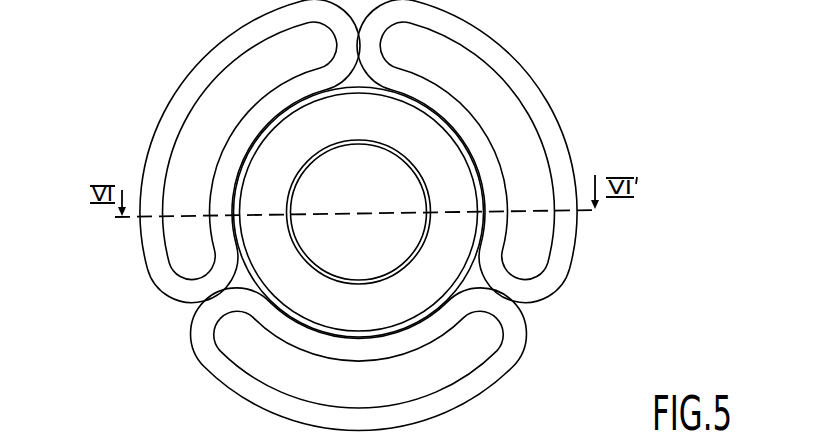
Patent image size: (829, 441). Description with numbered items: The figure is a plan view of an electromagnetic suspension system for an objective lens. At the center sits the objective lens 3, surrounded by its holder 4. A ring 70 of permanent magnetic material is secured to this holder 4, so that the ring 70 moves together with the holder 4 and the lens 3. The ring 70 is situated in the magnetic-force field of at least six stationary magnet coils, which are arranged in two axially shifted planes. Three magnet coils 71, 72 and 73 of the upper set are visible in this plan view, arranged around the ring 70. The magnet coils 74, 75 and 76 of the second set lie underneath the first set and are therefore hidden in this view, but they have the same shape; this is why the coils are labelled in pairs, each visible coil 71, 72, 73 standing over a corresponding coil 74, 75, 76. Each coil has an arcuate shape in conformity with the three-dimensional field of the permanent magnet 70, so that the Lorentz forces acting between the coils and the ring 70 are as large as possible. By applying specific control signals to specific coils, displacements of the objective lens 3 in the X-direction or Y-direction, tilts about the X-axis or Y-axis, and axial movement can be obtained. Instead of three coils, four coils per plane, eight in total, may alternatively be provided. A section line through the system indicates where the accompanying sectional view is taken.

The objective lens 3 is at (402, 220).
The holder 4 is at (302, 253).
The ring of permanent magnetic material 70 is at (455, 248).
The magnet coil 71 is at (383, 359).
The magnet coil 72 is at (508, 151).
The magnet coil 73 is at (214, 151).
The magnet coil 74 is at (513, 350).
The magnet coil 75 is at (565, 245).
The magnet coil 76 is at (158, 277).